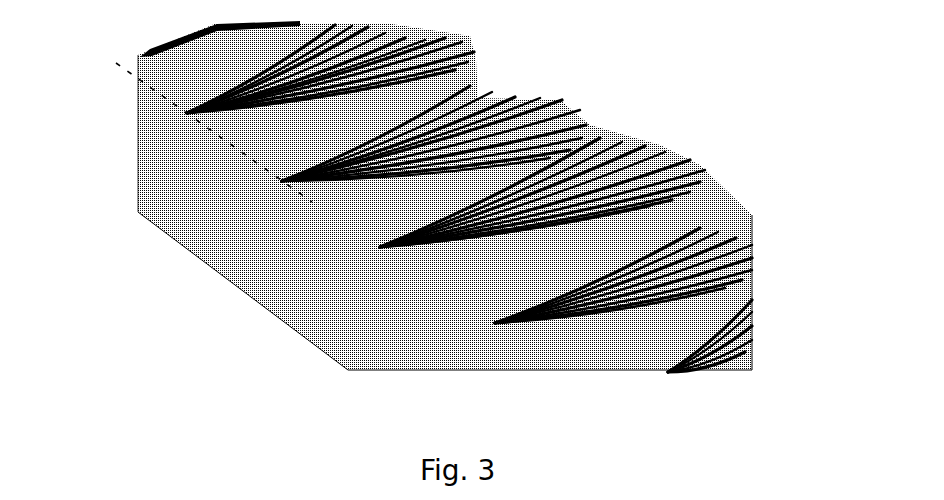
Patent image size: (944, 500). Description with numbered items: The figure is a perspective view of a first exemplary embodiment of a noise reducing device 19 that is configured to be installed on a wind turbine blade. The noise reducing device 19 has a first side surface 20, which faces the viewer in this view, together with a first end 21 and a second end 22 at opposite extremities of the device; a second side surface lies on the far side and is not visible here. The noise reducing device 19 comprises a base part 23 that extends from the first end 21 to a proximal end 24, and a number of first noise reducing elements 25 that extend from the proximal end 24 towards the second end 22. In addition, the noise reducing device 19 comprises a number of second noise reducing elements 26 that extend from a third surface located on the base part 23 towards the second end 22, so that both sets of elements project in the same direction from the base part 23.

The noise reducing device 19 is at (446, 186).
The first side surface 20 is at (332, 253).
The first end 21 is at (210, 263).
The second end 22 is at (618, 106).
The base part 23 is at (153, 146).
The proximal end 24 is at (160, 93).
The first noise reducing elements 25 is at (753, 253).
The second noise reducing elements 26 is at (505, 87).